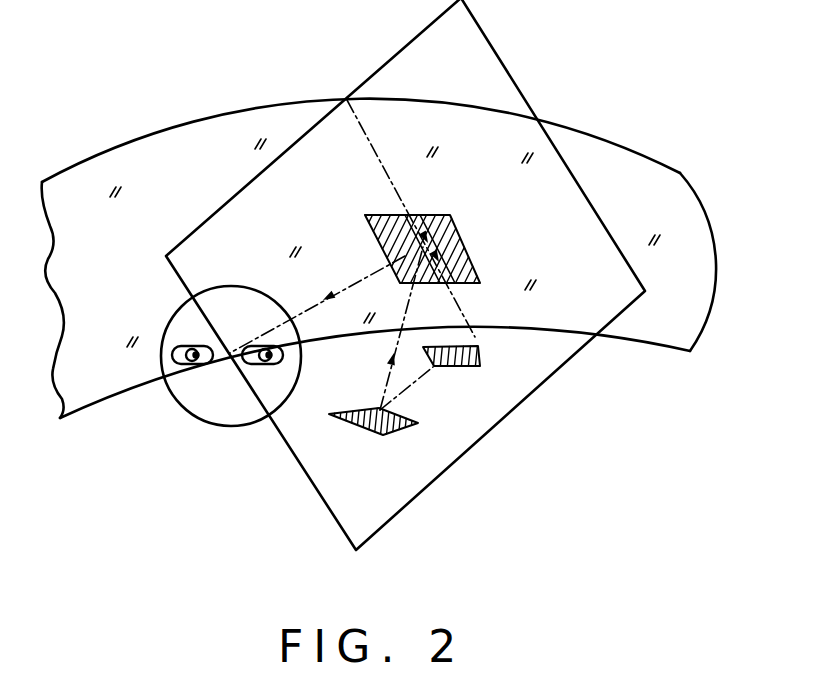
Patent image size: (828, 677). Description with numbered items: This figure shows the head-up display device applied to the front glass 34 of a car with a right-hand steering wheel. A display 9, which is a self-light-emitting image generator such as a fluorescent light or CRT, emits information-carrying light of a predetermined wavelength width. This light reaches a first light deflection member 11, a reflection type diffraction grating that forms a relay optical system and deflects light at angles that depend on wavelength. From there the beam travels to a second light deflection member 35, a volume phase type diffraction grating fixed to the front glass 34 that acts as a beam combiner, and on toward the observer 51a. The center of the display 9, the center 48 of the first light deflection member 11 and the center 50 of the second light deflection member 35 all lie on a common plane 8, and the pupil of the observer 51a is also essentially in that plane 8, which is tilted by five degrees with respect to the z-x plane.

The plane 8 is at (464, 32).
The front glass 34 is at (641, 176).
The center of the second light deflection member 50 is at (390, 213).
The second light deflection member 35 is at (452, 230).
The display 9 is at (482, 354).
The center of the first light deflection member 48 is at (405, 432).
The first light deflection member 11 is at (380, 432).
The observer 51a is at (232, 357).